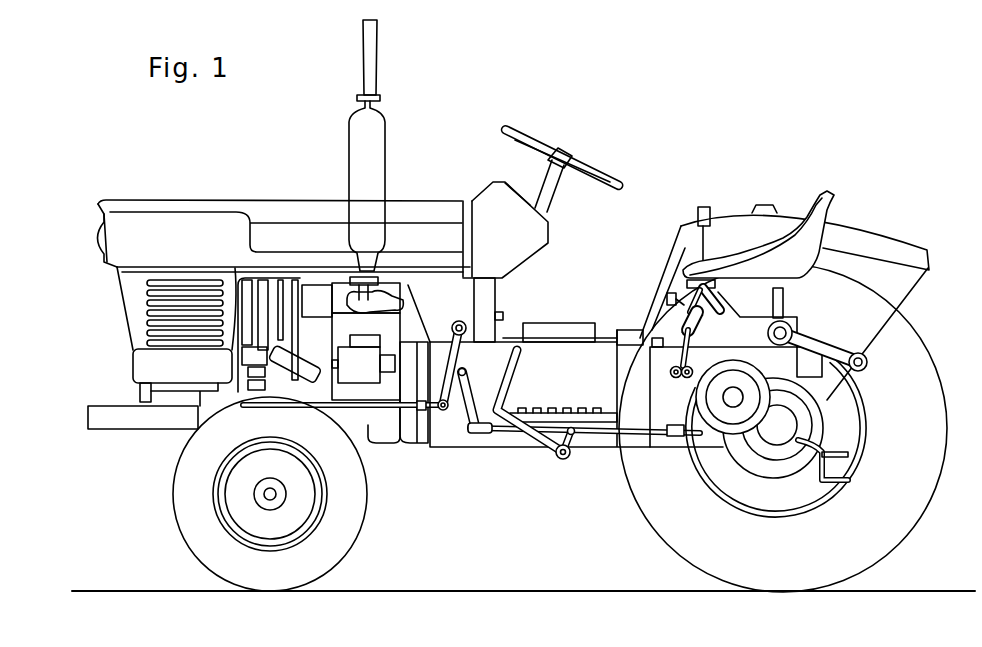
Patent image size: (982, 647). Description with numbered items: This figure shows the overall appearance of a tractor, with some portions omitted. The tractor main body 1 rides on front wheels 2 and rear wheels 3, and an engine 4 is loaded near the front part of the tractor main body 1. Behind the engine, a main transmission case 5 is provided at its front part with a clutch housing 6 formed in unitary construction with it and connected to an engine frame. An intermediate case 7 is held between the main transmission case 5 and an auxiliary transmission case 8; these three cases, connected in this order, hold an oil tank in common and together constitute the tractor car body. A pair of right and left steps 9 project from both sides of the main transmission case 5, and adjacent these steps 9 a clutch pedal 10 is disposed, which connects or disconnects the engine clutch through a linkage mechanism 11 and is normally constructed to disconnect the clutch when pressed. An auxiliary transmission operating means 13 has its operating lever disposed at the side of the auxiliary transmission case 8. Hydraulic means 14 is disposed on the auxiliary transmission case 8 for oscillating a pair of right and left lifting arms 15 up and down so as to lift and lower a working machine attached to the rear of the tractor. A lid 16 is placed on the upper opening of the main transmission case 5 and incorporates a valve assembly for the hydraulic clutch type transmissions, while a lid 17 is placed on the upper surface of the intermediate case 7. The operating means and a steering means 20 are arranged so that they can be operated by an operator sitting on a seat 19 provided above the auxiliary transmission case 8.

The tractor main body 1 is at (425, 192).
The front wheels 2 is at (175, 525).
The rear wheels 3 is at (645, 535).
The engine 4 is at (373, 425).
The main transmission case 5 is at (495, 447).
The clutch housing 6 is at (415, 440).
The intermediate case 7 is at (633, 447).
The auxiliary transmission case 8 is at (677, 438).
The steps 9 is at (545, 422).
The clutch pedal 10 is at (523, 378).
The linkage mechanism 11 is at (470, 434).
The auxiliary transmission operating means 13 is at (675, 360).
The hydraulic means 14 is at (758, 328).
The lifting arms 15 is at (870, 347).
The lid 16 is at (560, 322).
The lid 17 is at (616, 330).
The seat 19 is at (815, 232).
The steering means 20 is at (598, 171).